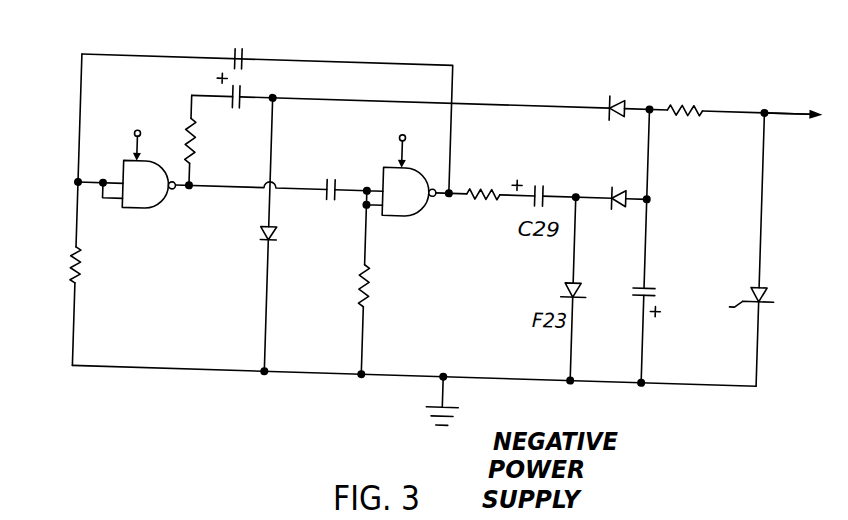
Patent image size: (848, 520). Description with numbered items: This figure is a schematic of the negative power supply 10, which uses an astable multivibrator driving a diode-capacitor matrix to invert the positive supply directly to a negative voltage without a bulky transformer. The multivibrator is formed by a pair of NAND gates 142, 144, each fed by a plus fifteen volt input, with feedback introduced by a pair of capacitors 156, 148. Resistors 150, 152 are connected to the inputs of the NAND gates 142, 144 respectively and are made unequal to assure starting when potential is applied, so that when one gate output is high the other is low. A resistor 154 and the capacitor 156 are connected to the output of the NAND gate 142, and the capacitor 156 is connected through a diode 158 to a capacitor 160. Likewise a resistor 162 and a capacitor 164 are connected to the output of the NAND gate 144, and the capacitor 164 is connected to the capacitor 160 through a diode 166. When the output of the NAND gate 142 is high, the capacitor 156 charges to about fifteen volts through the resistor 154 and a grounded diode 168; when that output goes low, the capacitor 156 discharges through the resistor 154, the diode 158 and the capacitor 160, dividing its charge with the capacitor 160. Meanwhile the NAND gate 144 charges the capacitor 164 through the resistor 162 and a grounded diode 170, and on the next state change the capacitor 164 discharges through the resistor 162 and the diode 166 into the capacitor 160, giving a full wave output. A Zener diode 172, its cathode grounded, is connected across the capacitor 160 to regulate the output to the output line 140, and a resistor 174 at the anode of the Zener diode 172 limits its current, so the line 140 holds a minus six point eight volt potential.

The negative power supply circuit 10 is at (44, 66).
The output line 140 is at (779, 90).
The NAND gate 142 is at (157, 201).
The NAND gate 144 is at (418, 204).
The capacitor 148 is at (237, 49).
The resistor 150 is at (84, 258).
The resistor 152 is at (362, 279).
The resistor 154 is at (193, 138).
The capacitor 156 is at (243, 80).
The diode 158 is at (616, 80).
The capacitor 160 is at (659, 279).
The resistor 162 is at (500, 178).
The capacitor 164 is at (546, 161).
The diode 166 is at (632, 160).
The diode 168 is at (266, 236).
The diode 170 is at (566, 279).
The Zener diode 172 is at (792, 267).
The resistor 174 is at (683, 86).